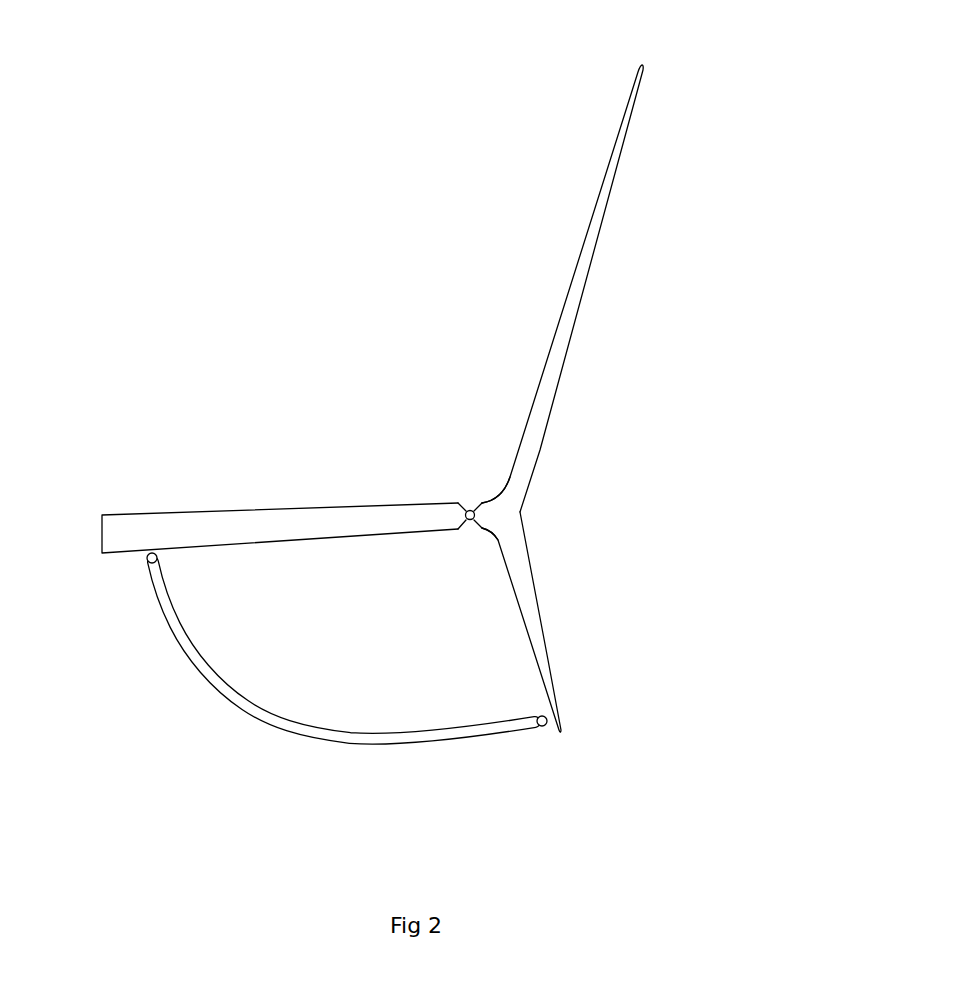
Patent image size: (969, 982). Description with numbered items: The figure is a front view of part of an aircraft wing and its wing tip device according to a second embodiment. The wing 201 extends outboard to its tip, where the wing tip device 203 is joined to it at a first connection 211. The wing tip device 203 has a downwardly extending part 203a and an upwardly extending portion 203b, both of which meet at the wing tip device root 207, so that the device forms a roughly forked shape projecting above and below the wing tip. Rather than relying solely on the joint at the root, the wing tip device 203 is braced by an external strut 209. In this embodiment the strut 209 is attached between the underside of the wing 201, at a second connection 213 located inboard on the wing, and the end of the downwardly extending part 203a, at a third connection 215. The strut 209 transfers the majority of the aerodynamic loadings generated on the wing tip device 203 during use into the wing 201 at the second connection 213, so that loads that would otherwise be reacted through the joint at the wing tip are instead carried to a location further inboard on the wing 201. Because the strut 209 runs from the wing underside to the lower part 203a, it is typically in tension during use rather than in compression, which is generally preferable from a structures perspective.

The wing 201 is at (273, 510).
The wing tip device 203 is at (596, 405).
The downwardly extending part of the wing tip device 203a is at (540, 615).
The upwardly extending portion of the wing tip device 203b is at (580, 313).
The wing tip device root 207 is at (500, 517).
The strut 209 is at (245, 720).
The first connection 211 is at (465, 505).
The second connection 213 is at (147, 563).
The third connection 215 is at (544, 727).